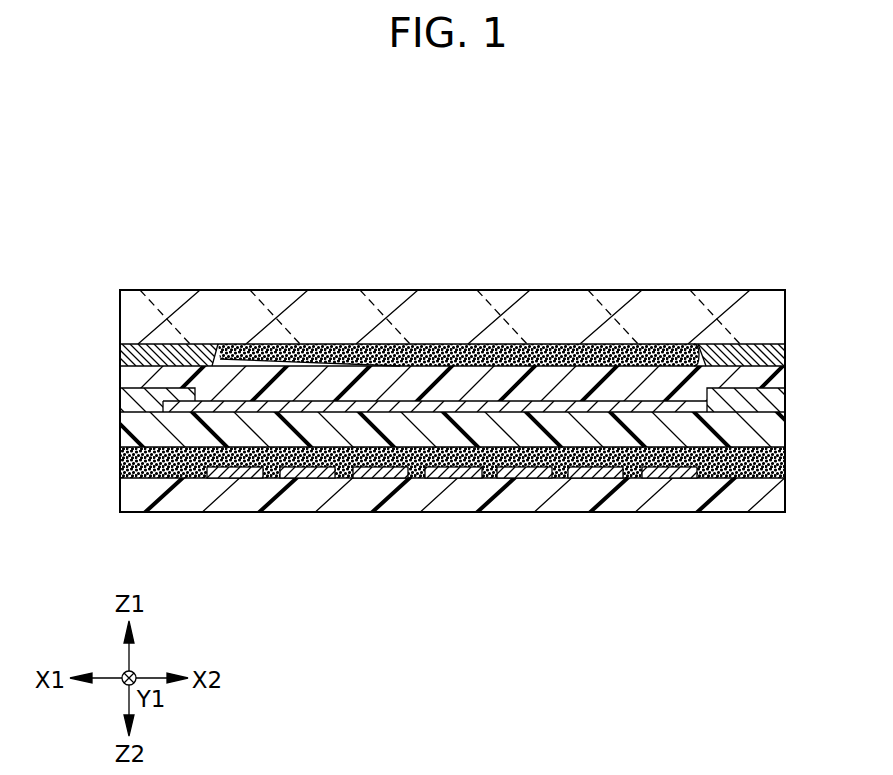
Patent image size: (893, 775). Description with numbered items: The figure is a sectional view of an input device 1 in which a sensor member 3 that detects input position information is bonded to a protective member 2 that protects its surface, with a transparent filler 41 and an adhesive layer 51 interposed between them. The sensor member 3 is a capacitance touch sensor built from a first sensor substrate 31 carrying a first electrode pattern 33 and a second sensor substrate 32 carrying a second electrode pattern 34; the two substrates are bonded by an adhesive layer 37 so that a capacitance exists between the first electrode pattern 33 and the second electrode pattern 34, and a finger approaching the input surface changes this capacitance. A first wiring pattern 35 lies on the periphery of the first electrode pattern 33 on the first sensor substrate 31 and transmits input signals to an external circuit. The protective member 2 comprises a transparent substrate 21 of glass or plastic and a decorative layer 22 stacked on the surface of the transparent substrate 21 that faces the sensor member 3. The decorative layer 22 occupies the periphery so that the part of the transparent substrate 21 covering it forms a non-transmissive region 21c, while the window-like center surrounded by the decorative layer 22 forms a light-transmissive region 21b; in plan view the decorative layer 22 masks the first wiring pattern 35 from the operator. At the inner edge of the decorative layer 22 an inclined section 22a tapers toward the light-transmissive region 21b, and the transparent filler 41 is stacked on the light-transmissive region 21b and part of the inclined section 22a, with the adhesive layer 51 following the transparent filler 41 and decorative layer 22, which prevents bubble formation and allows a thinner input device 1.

The input device 1 is at (578, 174).
The protective member 2 is at (680, 232).
The transparent substrate 21 is at (773, 303).
The light-transmissive region 21b is at (688, 277).
The non-transmissive region 21c is at (115, 277).
The decorative layer 22 is at (747, 353).
The inclined section 22a is at (700, 356).
The sensor member 3 is at (798, 513).
The first sensor substrate 31 is at (455, 440).
The second sensor substrate 32 is at (522, 500).
The first electrode pattern 33 is at (600, 405).
The second electrode pattern 34 is at (665, 475).
The first wiring pattern 35 is at (133, 399).
The adhesive layer 37 is at (715, 474).
The transparent filler 41 is at (262, 357).
The adhesive layer 51 is at (311, 390).